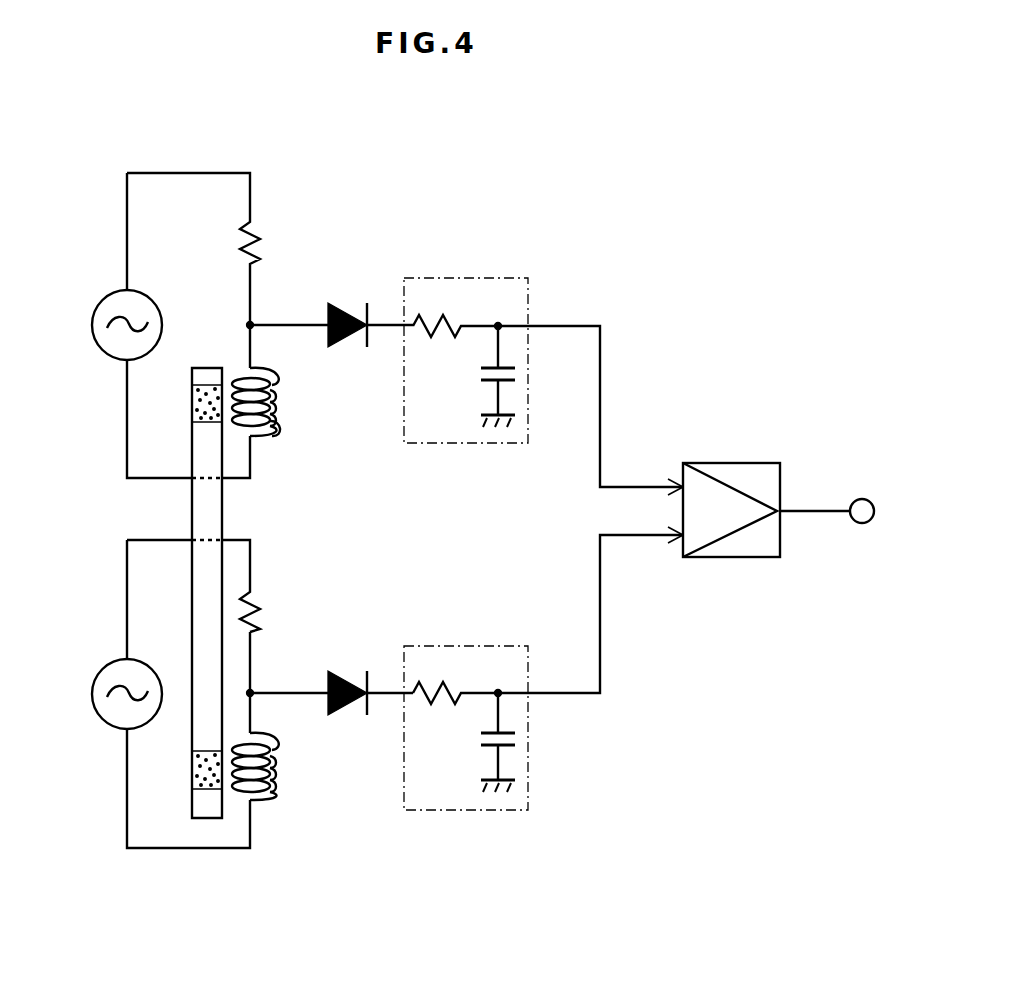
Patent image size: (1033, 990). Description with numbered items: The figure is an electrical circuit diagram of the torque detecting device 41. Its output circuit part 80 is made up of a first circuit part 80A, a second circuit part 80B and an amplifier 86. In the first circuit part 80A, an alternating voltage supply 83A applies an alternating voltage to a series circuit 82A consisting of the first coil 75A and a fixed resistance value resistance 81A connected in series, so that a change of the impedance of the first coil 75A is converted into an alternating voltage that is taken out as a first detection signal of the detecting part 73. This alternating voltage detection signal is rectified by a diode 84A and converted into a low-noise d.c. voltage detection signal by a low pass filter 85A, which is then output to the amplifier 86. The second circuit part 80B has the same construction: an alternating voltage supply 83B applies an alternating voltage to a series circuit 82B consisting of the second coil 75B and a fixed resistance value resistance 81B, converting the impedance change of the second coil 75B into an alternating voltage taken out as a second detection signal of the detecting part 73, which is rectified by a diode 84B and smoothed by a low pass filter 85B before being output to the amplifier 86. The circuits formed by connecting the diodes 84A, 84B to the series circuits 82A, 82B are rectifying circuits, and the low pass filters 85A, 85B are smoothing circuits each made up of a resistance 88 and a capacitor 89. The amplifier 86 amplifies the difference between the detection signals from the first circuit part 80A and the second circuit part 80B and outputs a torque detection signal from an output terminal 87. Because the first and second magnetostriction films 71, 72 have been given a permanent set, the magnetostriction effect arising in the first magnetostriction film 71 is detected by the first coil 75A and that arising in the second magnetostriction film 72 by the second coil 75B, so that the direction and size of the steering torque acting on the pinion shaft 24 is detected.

The torque detecting device 41 is at (678, 103).
The series circuit 82A is at (182, 173).
The series circuit 82B is at (228, 848).
The resistance 81A is at (262, 242).
The resistance 81B is at (262, 612).
The alternating voltage supply 83A is at (100, 298).
The alternating voltage supply 83B is at (108, 665).
The diode 84A is at (350, 303).
The diode 84B is at (349, 671).
The low pass filter 85A is at (462, 278).
The low pass filter 85B is at (460, 646).
The resistance 88 is at (455, 338).
The capacitor 89 is at (518, 374).
The first circuit part 80A is at (570, 278).
The second circuit part 80B is at (550, 620).
The output circuit part 80 is at (762, 158).
The amplifier 86 is at (735, 462).
The output terminal 87 is at (862, 498).
The first magnetostriction film 71 is at (193, 402).
The second magnetostriction film 72 is at (194, 770).
The detecting part 73 is at (273, 443).
The first coil 75A is at (277, 418).
The second coil 75B is at (277, 782).
The pinion shaft 24 is at (201, 806).